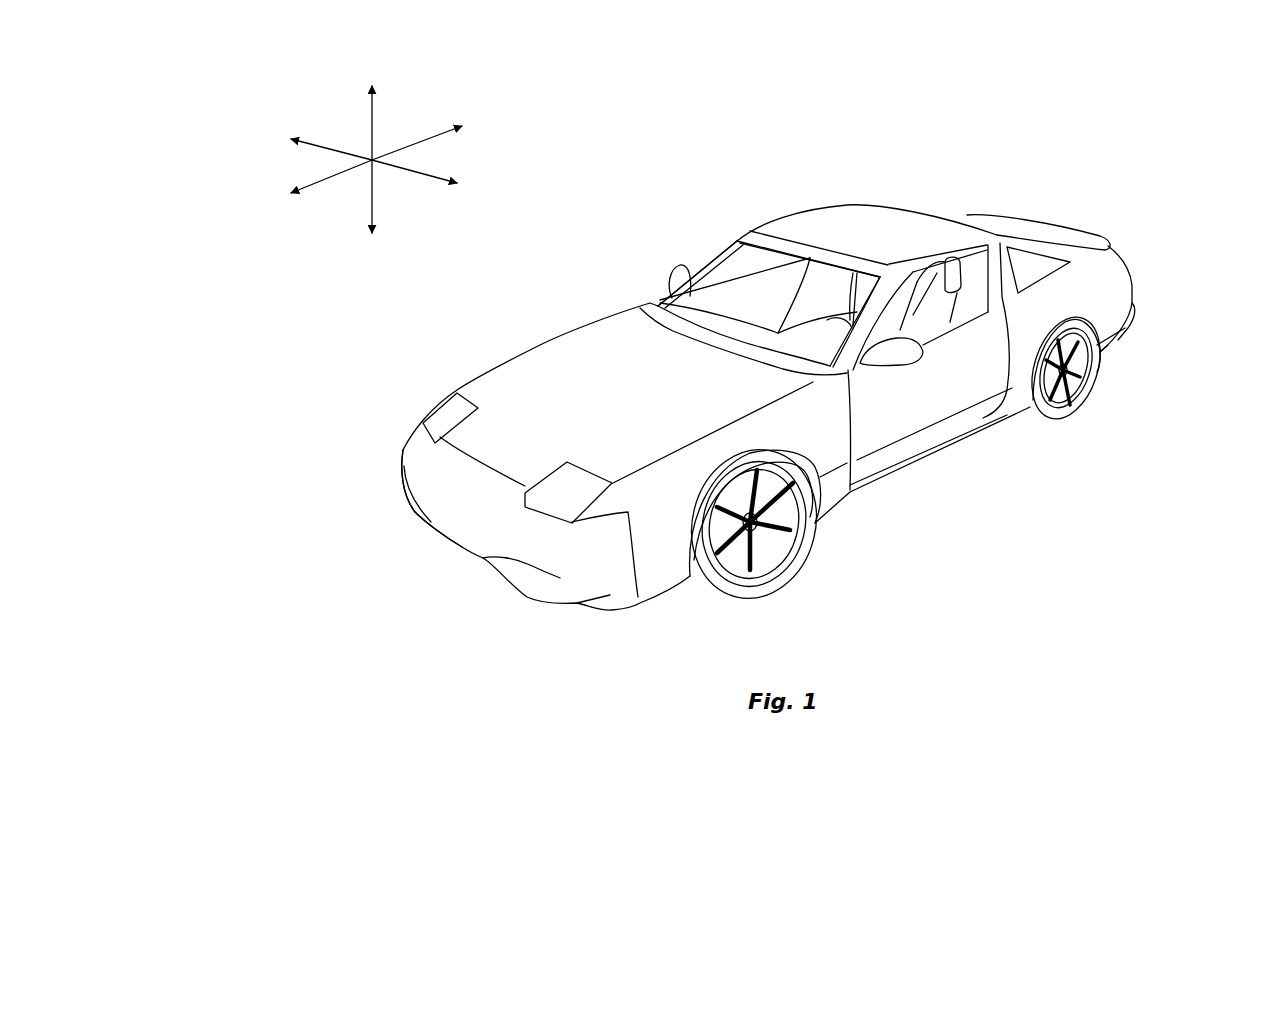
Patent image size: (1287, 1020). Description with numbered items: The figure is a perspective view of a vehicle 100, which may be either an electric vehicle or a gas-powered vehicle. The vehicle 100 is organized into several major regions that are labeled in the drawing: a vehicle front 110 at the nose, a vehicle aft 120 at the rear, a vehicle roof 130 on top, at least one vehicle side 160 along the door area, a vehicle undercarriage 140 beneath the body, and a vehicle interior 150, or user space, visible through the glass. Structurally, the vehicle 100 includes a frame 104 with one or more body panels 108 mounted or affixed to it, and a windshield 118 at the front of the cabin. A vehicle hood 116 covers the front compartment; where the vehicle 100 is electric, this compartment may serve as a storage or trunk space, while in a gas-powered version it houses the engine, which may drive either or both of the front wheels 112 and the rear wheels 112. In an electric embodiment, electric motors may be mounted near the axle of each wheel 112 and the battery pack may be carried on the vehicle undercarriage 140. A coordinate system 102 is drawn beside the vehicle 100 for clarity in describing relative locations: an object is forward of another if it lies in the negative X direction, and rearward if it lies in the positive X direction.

The vehicle 100 is at (778, 359).
The coordinate system 102 is at (350, 177).
The frame 104 is at (937, 455).
The body panels 108 is at (443, 490).
The vehicle front 110 is at (411, 581).
The wheel 112 is at (772, 578).
The vehicle hood 116 is at (543, 367).
The windshield 118 is at (745, 254).
The vehicle aft 120 is at (1123, 229).
The vehicle roof 130 is at (870, 226).
The vehicle undercarriage 140 is at (877, 500).
The vehicle interior 150 is at (735, 291).
The vehicle side 160 is at (958, 404).